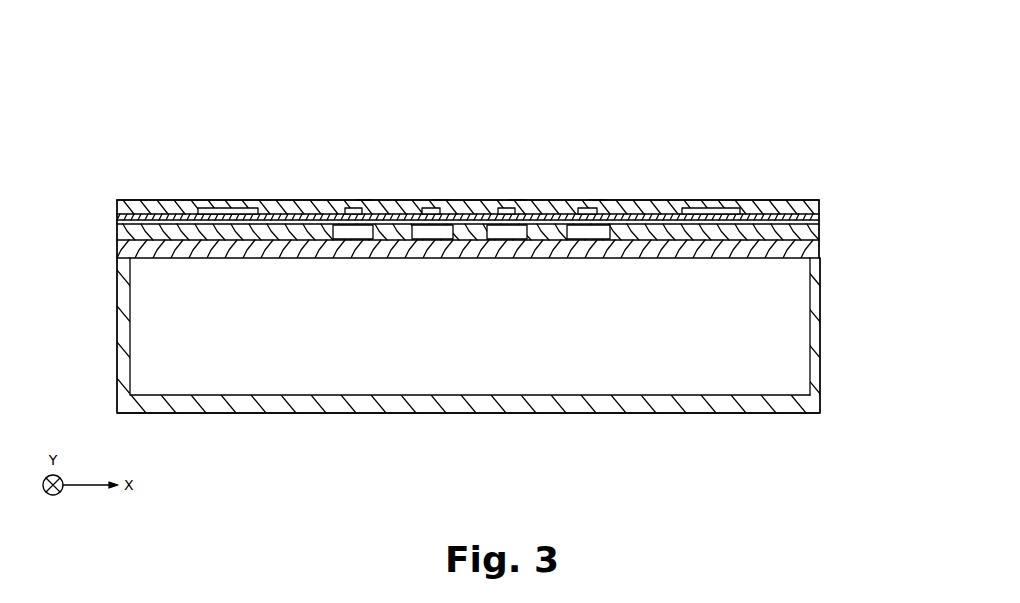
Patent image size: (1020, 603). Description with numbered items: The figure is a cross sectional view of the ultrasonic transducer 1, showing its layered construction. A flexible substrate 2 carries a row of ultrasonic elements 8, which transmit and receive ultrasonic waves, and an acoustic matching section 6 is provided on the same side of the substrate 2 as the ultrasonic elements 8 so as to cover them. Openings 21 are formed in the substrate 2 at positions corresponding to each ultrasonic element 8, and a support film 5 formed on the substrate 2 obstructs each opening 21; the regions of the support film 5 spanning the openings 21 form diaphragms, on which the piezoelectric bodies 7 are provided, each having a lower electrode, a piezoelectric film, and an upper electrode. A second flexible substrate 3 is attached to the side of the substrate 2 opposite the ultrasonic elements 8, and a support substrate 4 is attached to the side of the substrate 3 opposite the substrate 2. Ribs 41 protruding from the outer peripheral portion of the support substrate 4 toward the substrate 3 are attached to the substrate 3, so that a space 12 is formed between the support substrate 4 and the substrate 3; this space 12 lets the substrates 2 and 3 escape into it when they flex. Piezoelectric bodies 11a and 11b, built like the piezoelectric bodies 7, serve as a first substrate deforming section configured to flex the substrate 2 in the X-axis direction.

The ultrasonic transducer 1 is at (748, 85).
The substrate 2 is at (815, 229).
The substrate 3 is at (818, 248).
The support substrate 4 is at (760, 407).
The support film 5 is at (815, 220).
The acoustic matching section 6 is at (790, 210).
The piezoelectric body 7 is at (471, 179).
The ultrasonic element 8 is at (489, 173).
The piezoelectric body 11a is at (712, 208).
The piezoelectric body 11b is at (237, 208).
The space 12 is at (649, 370).
The opening 21 is at (471, 261).
The rib 41 is at (815, 325).